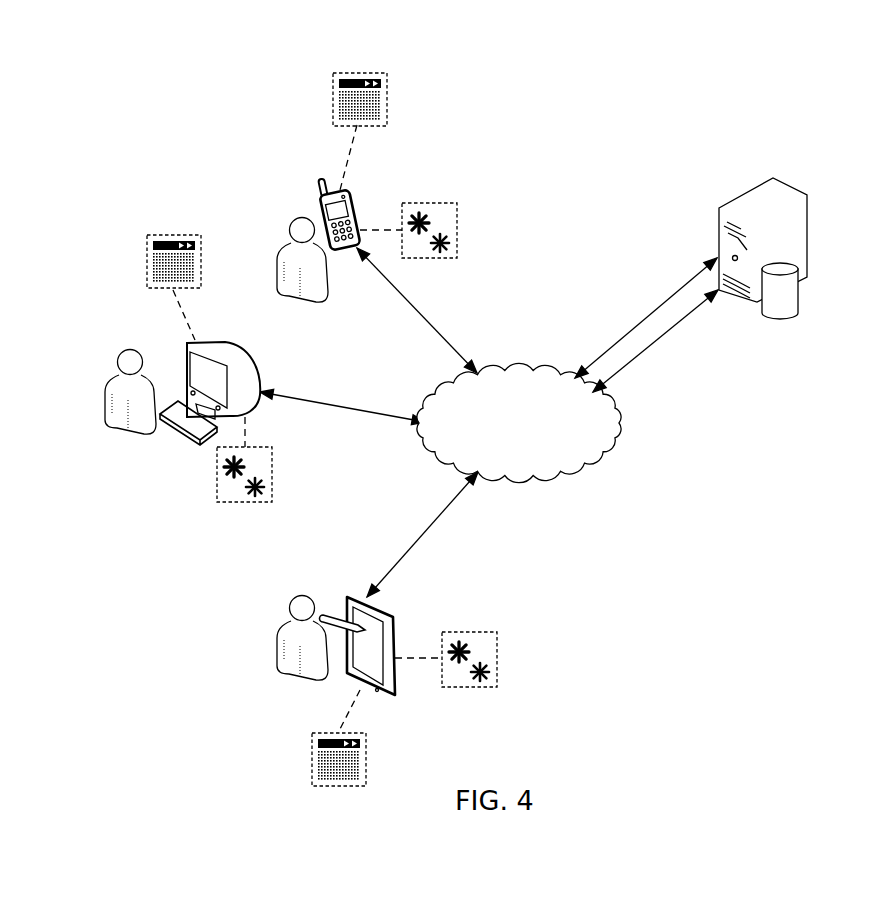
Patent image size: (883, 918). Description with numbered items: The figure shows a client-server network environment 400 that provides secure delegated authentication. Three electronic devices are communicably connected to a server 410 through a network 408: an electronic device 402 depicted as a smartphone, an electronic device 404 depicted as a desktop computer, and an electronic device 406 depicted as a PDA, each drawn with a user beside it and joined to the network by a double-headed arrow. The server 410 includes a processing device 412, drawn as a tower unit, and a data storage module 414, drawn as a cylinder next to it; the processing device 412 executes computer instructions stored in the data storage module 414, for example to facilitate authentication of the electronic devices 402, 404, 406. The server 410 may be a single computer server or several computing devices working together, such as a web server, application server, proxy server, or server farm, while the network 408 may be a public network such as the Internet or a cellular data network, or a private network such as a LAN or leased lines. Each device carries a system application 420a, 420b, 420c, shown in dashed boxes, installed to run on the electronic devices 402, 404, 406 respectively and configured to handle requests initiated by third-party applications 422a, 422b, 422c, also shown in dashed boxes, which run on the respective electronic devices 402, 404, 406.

The network environment 400 is at (108, 62).
The electronic device 402 is at (348, 190).
The electronic device 404 is at (238, 348).
The electronic device 406 is at (393, 612).
The network 408 is at (522, 372).
The server 410 is at (726, 308).
The processing device 412 is at (787, 185).
The data storage module 414 is at (798, 317).
The system application 420a is at (425, 203).
The system application 420b is at (272, 470).
The system application 420c is at (468, 632).
The third-party application 422a is at (387, 113).
The third-party application 422b is at (173, 233).
The third-party application 422c is at (365, 770).